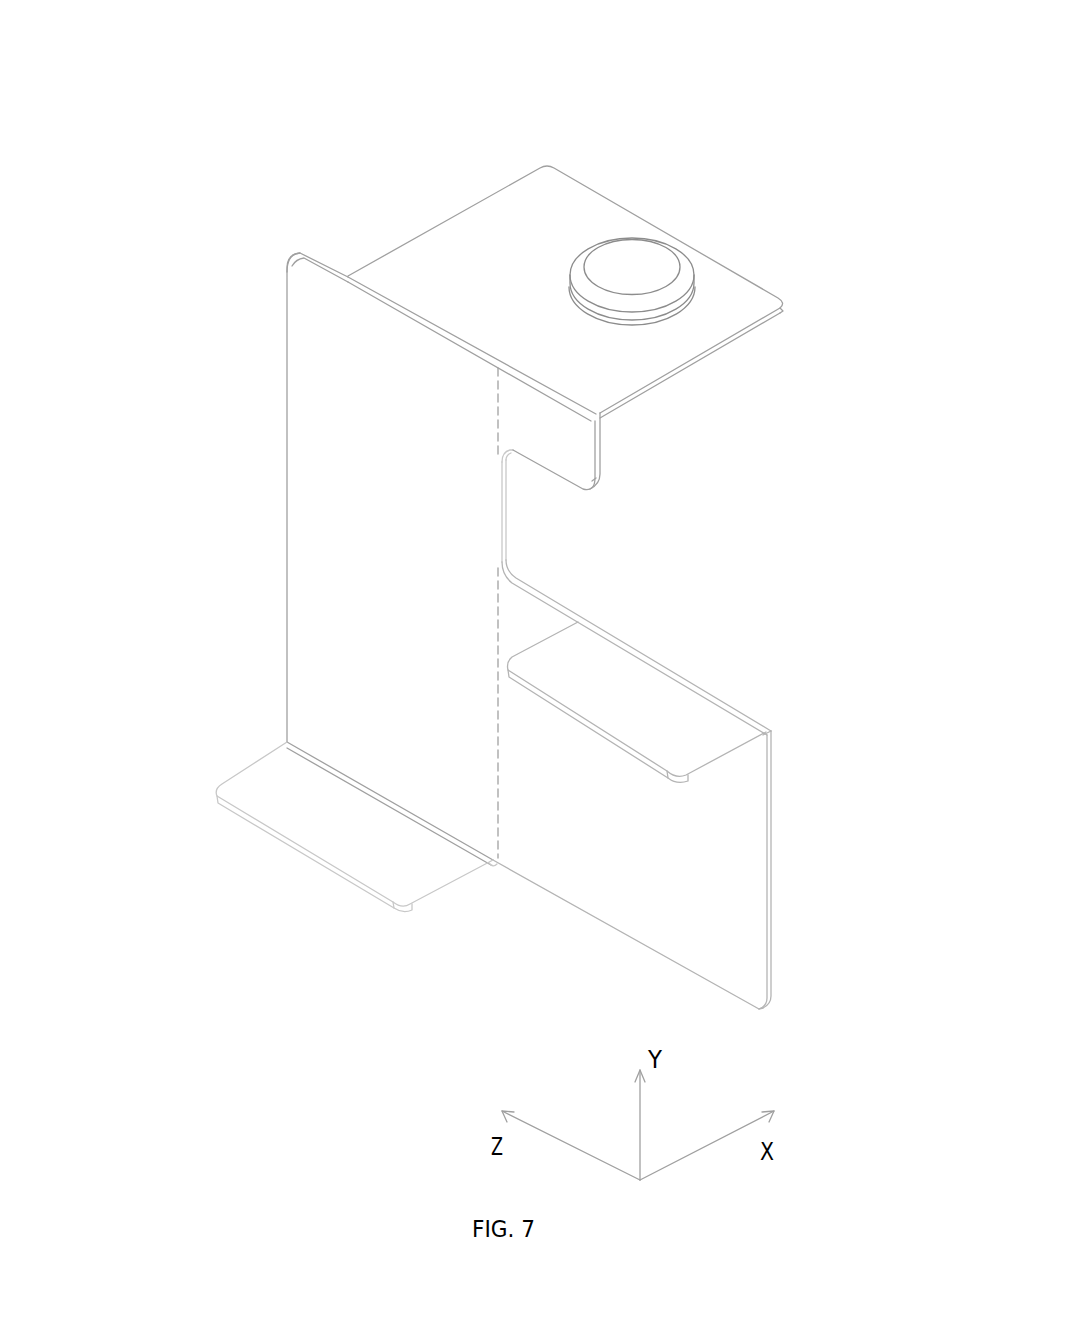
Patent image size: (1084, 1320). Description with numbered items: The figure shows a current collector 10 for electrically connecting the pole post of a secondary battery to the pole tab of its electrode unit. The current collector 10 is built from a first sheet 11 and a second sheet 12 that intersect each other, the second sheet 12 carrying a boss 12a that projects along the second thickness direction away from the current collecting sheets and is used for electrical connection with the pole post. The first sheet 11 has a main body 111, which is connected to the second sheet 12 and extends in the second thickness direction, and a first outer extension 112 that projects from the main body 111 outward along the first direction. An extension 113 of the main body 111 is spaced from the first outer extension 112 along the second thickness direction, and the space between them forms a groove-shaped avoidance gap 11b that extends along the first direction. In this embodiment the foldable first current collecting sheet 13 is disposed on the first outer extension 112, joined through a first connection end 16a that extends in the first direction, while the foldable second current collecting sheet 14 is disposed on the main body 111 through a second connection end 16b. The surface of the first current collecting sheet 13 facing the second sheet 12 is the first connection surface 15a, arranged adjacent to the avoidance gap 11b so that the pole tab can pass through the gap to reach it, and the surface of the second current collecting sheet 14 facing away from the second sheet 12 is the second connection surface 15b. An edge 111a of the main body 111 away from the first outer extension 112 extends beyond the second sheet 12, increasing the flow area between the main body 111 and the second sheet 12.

The current collector 10 is at (626, 30).
The first sheet 11 is at (242, 592).
The avoidance gap 11b is at (545, 527).
The main body 111 is at (330, 471).
The edge 111a is at (313, 262).
The first outer extension 112 is at (710, 866).
The extension 113 is at (558, 444).
The second sheet 12 is at (480, 285).
The boss 12a is at (632, 267).
The first current collecting sheet 13 is at (680, 778).
The second current collecting sheet 14 is at (253, 828).
The first connection surface 15a is at (657, 699).
The second connection surface 15b is at (303, 853).
The first connection end 16a is at (772, 735).
The second connection end 16b is at (493, 862).